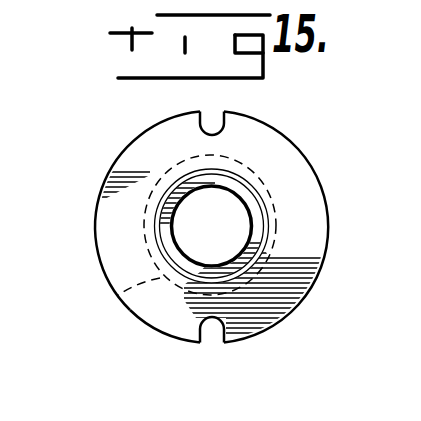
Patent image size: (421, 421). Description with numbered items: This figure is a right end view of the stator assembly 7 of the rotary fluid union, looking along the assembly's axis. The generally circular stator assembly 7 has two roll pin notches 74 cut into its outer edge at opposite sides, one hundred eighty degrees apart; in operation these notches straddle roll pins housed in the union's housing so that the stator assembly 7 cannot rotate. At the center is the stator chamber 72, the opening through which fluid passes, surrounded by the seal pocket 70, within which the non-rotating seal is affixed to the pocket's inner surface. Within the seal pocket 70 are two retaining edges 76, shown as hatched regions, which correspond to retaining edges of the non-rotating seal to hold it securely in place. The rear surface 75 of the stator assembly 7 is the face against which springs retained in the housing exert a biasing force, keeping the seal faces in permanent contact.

The stator assembly 7 is at (326, 186).
The seal pocket 70 is at (118, 293).
The stator chamber 72 is at (221, 205).
The roll pin notches 74 is at (213, 121).
The rear surface 75 is at (160, 310).
The retaining edges 76 is at (113, 178).